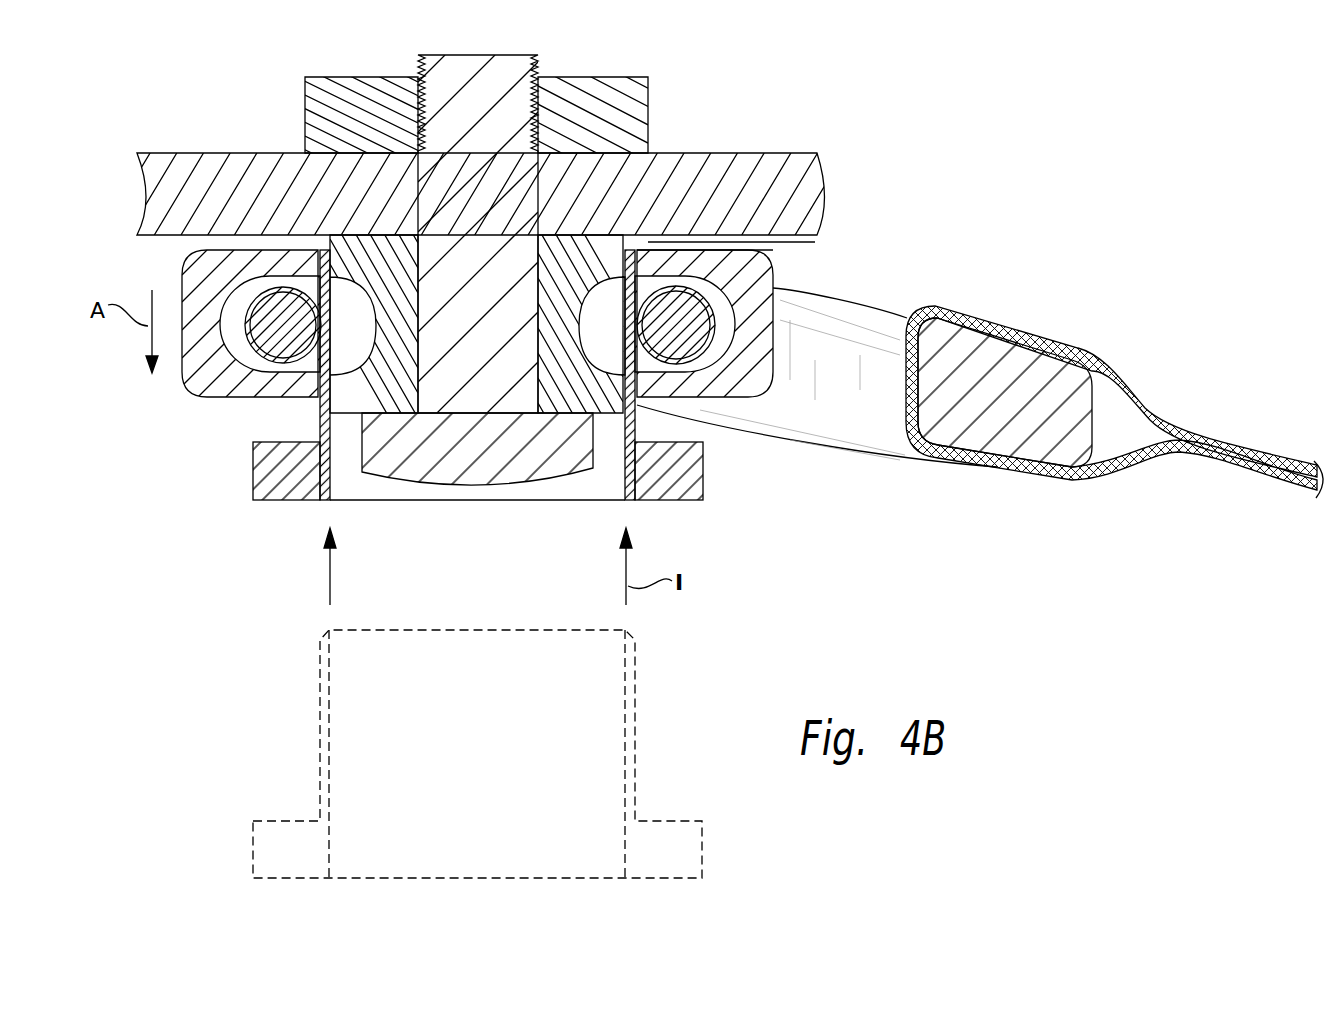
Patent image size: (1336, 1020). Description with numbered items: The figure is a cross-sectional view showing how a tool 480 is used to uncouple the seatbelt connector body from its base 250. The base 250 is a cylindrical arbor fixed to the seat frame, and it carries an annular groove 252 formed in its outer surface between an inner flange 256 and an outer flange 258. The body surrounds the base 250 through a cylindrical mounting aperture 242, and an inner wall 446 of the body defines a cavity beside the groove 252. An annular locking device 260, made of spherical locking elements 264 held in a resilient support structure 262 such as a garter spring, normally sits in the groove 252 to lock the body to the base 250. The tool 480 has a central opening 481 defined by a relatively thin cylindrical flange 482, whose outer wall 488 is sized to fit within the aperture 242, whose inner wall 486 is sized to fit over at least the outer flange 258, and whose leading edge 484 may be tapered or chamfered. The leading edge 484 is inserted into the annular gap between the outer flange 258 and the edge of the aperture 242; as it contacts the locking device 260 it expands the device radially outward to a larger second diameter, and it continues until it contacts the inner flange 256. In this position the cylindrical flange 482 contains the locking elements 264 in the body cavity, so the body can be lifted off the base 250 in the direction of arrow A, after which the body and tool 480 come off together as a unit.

The mounting aperture 242 is at (621, 398).
The base 250 is at (612, 400).
The annular groove 252 is at (530, 452).
The inner flange 256 is at (648, 243).
The outer flange 258 is at (748, 377).
The annular locking device 260 is at (780, 243).
The resilient support structure 262 is at (772, 276).
The locking elements 264 is at (692, 327).
The inner wall 446 is at (757, 300).
The tool 480 is at (474, 564).
The central opening 481 is at (343, 454).
The cylindrical flange 482 is at (302, 400).
The leading edge 484 is at (325, 266).
The inner wall 486 is at (334, 276).
The outer wall 488 is at (318, 420).